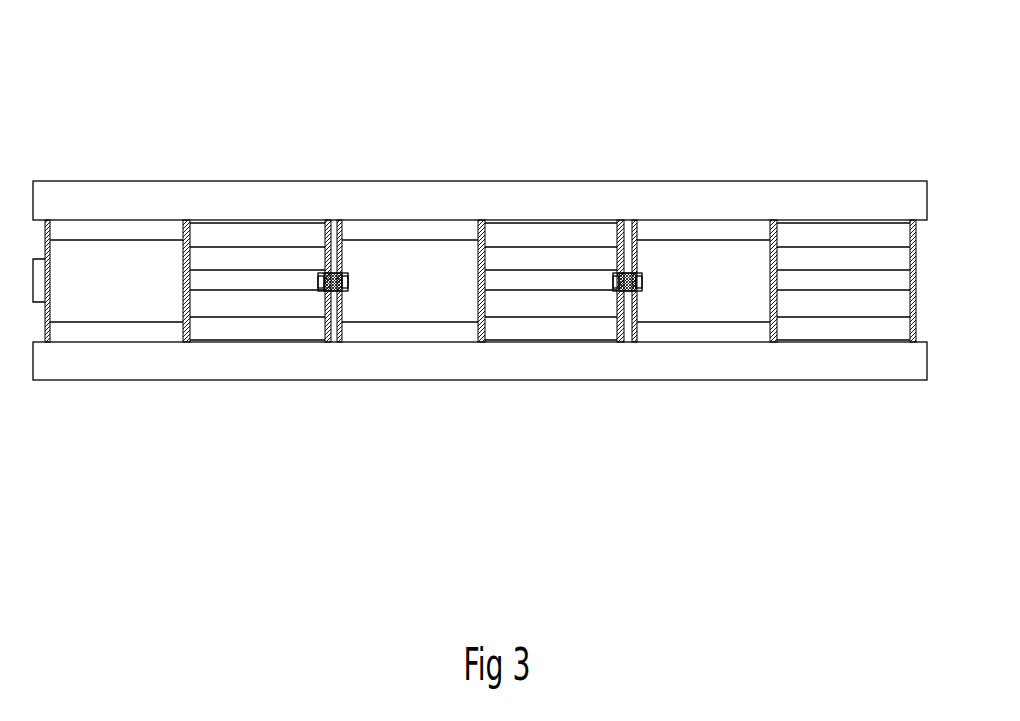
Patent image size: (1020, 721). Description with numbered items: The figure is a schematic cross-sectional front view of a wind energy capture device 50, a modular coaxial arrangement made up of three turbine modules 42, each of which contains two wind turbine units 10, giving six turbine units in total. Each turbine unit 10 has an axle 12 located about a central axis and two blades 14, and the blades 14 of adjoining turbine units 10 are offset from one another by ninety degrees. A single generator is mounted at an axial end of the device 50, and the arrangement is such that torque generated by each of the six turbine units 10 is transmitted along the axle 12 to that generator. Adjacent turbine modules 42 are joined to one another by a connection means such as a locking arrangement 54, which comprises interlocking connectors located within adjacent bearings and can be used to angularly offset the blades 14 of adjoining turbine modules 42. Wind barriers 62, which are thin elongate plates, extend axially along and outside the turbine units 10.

The wind energy capture device 50 is at (76, 102).
The wind turbine unit 10 is at (110, 225).
The blade 14 is at (203, 235).
The axle 12 is at (293, 282).
The locking arrangement 54 is at (333, 288).
The turbine module 42 is at (167, 397).
The wind barrier 62 is at (475, 210).